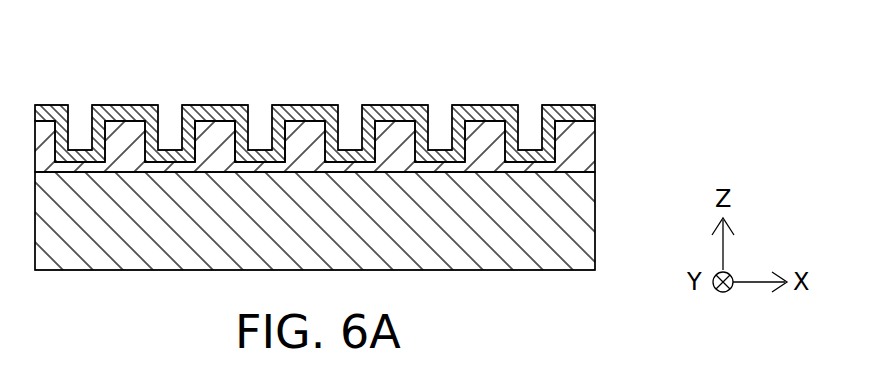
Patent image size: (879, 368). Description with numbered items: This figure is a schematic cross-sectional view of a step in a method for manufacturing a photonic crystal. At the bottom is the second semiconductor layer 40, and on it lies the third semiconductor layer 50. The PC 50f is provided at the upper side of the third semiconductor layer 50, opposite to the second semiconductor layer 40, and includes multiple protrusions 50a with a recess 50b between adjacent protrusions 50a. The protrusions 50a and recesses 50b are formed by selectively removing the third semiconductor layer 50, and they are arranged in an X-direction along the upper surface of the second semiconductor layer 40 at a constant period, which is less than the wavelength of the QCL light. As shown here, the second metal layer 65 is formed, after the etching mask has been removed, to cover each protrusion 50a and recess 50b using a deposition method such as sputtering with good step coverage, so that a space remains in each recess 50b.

The second semiconductor layer 40 is at (583, 225).
The third semiconductor layer 50 is at (583, 144).
The protrusion 50a is at (212, 120).
The recess 50b is at (260, 118).
The PC 50f is at (297, 30).
The second metal layer 65 is at (395, 117).